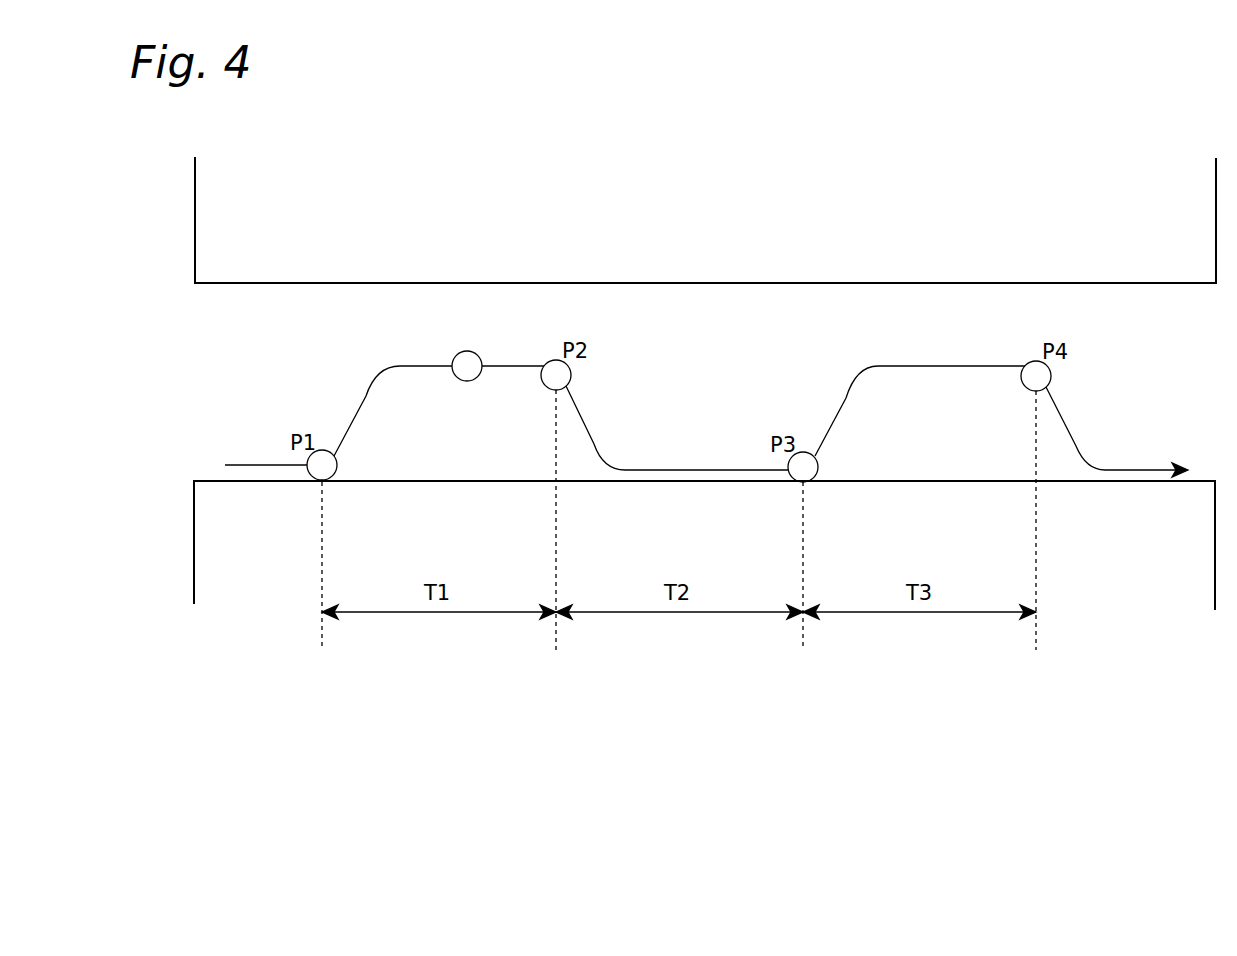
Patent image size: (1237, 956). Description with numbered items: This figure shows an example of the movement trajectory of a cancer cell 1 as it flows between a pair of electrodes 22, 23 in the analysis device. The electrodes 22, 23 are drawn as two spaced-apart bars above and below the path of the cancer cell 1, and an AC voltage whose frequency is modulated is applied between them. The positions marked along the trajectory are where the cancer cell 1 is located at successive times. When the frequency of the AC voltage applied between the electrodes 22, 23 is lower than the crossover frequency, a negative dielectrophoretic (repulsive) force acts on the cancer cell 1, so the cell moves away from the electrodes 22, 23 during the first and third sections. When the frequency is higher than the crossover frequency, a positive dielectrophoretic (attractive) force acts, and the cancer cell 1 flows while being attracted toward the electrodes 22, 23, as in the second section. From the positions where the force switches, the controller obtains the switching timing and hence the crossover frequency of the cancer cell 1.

The cancer cell 1 is at (456, 352).
The electrode 22 is at (195, 214).
The electrode 23 is at (194, 541).